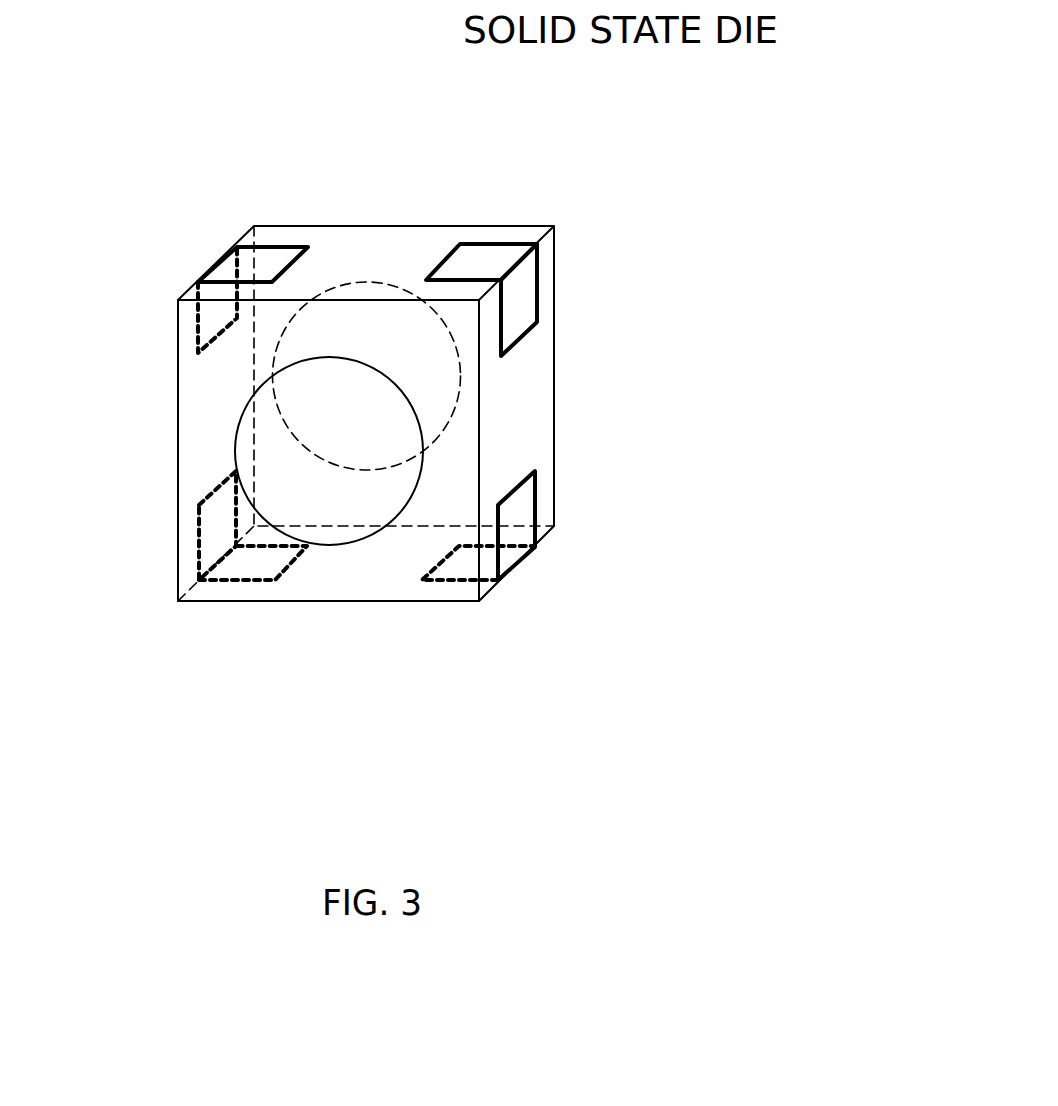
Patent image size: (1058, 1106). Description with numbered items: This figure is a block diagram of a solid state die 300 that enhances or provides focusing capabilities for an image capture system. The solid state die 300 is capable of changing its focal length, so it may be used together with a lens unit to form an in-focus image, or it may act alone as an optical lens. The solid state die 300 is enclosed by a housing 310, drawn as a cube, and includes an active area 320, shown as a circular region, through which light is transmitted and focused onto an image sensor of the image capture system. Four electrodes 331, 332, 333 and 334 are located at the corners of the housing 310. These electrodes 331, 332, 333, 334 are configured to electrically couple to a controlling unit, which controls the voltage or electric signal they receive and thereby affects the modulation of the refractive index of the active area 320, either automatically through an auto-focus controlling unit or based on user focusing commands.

The solid state die 300 is at (328, 342).
The housing 310 is at (380, 225).
The active area 320 is at (360, 537).
The electrode 331 is at (525, 333).
The electrode 332 is at (525, 558).
The electrode 333 is at (198, 537).
The electrode 334 is at (198, 327).